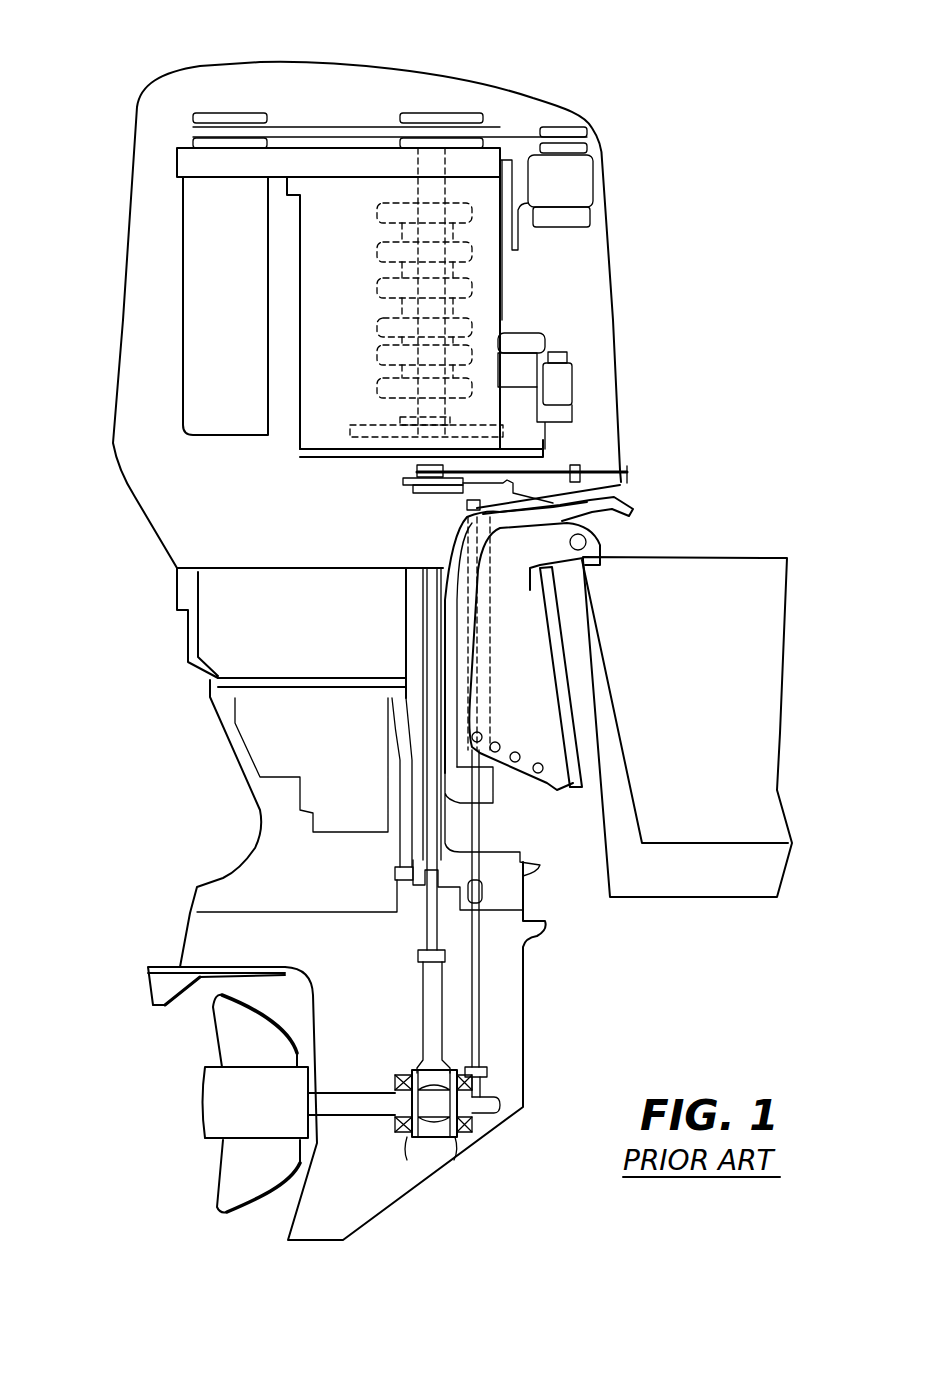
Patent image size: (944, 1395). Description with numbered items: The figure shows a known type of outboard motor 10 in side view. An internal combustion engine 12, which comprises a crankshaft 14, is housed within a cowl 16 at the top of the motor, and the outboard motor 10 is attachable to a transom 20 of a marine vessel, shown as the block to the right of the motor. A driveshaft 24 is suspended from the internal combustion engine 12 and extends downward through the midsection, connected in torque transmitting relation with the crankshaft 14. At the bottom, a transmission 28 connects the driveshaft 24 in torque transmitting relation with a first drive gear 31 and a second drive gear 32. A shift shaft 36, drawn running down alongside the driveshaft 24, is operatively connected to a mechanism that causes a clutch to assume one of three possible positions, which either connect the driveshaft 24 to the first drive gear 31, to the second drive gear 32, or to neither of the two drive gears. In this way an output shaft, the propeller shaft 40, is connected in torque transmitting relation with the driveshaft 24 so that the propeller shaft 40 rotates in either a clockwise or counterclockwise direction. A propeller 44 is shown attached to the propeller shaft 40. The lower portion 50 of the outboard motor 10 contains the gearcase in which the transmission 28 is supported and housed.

The outboard motor 10 is at (655, 175).
The internal combustion engine 12 is at (328, 197).
The crankshaft 14 is at (413, 187).
The cowl 16 is at (120, 350).
The transom 20 is at (580, 688).
The driveshaft 24 is at (430, 978).
The transmission 28 is at (403, 1074).
The first drive gear 31 is at (410, 1140).
The second drive gear 32 is at (456, 1135).
The shift shaft 36 is at (480, 975).
The propeller shaft 40 is at (360, 1107).
The propeller 44 is at (242, 1185).
The lower portion 50 is at (202, 942).